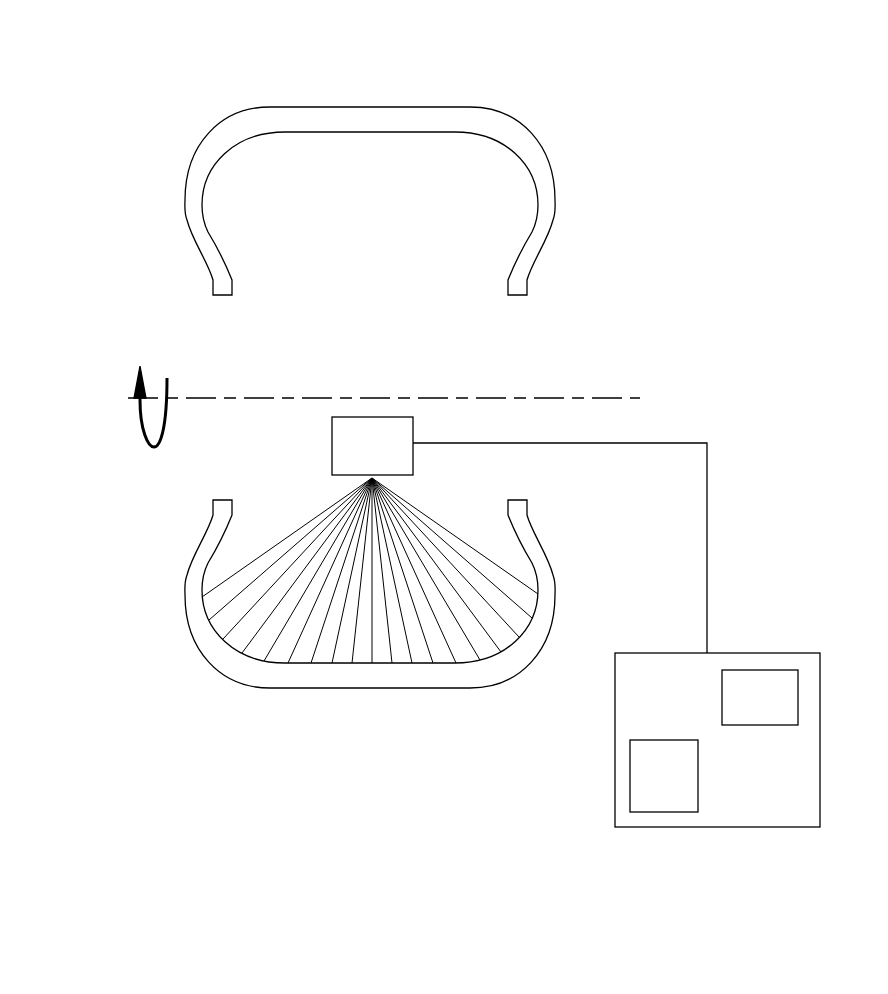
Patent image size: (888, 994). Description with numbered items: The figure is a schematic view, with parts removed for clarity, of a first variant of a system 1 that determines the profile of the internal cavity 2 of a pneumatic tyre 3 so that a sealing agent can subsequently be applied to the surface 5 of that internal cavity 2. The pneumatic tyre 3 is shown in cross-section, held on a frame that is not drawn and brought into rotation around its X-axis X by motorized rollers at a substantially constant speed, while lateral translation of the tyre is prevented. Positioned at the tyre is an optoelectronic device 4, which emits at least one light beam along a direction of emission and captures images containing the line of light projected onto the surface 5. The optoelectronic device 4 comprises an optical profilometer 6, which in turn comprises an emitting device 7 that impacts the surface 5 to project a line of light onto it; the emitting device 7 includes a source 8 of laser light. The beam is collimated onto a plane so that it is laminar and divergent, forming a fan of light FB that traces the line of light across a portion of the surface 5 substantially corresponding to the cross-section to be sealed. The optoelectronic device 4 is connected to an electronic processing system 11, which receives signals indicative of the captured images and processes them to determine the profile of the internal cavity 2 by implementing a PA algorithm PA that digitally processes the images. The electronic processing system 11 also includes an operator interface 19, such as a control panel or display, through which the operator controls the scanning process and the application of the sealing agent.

The system 1 is at (508, 432).
The internal cavity 2 is at (351, 365).
The pneumatic tyre 3 is at (212, 137).
The optoelectronic device 4 is at (370, 501).
The surface 5 is at (538, 206).
The optical profilometer 6 is at (345, 407).
The emitting device 7 is at (372, 407).
The source of laser light 8 is at (372, 427).
The electronic processing system 11 is at (650, 635).
The operator interface 19 is at (760, 697).
The X-axis X is at (558, 397).
The fan beam FB is at (370, 561).
The PA algorithm PA is at (664, 776).